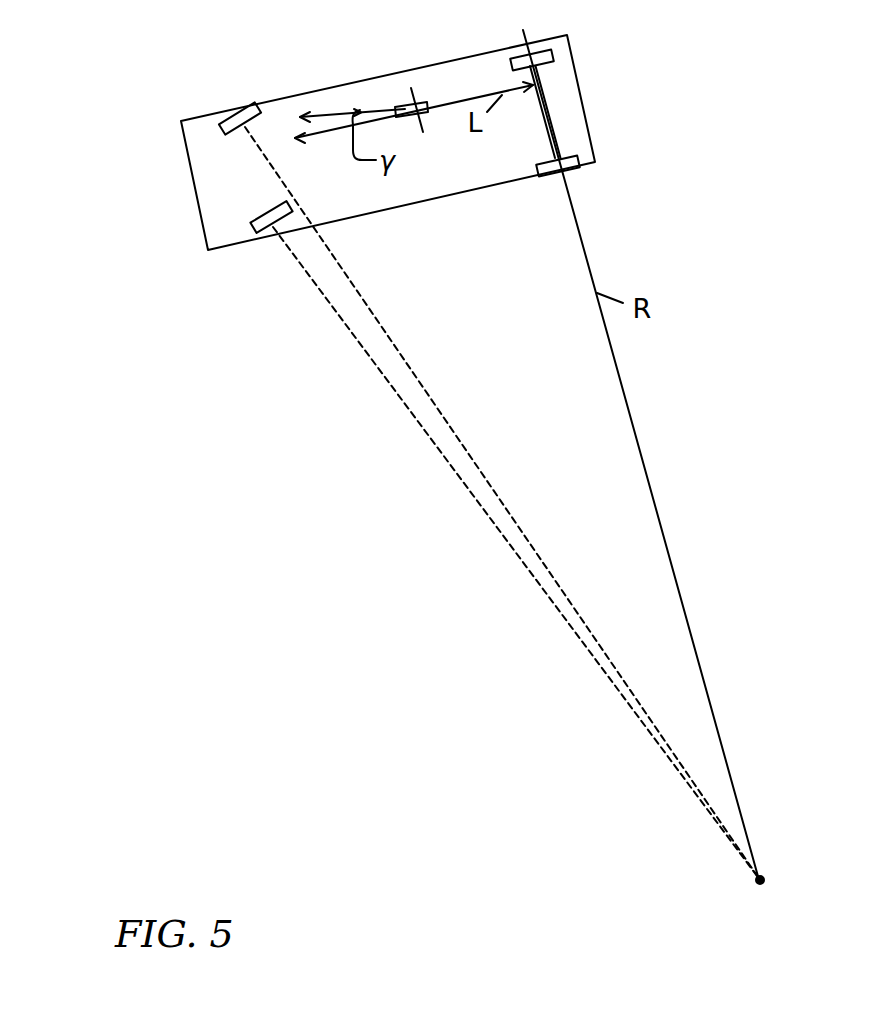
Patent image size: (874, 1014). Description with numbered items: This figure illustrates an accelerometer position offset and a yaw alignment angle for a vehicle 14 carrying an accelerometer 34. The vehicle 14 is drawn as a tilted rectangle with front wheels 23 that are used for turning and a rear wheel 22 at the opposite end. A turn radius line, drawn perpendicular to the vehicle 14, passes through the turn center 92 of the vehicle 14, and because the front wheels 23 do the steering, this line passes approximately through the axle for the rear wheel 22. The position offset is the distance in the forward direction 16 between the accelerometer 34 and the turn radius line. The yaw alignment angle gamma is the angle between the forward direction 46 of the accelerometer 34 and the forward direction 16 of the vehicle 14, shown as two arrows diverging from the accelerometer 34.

The vehicle 14 is at (214, 110).
The front wheels 23 is at (265, 213).
The rear wheel 22 is at (552, 57).
The accelerometer 34 is at (405, 103).
The forward direction of the accelerometer 46 is at (333, 163).
The forward direction of the vehicle 16 is at (414, 146).
The turn center 92 is at (765, 877).